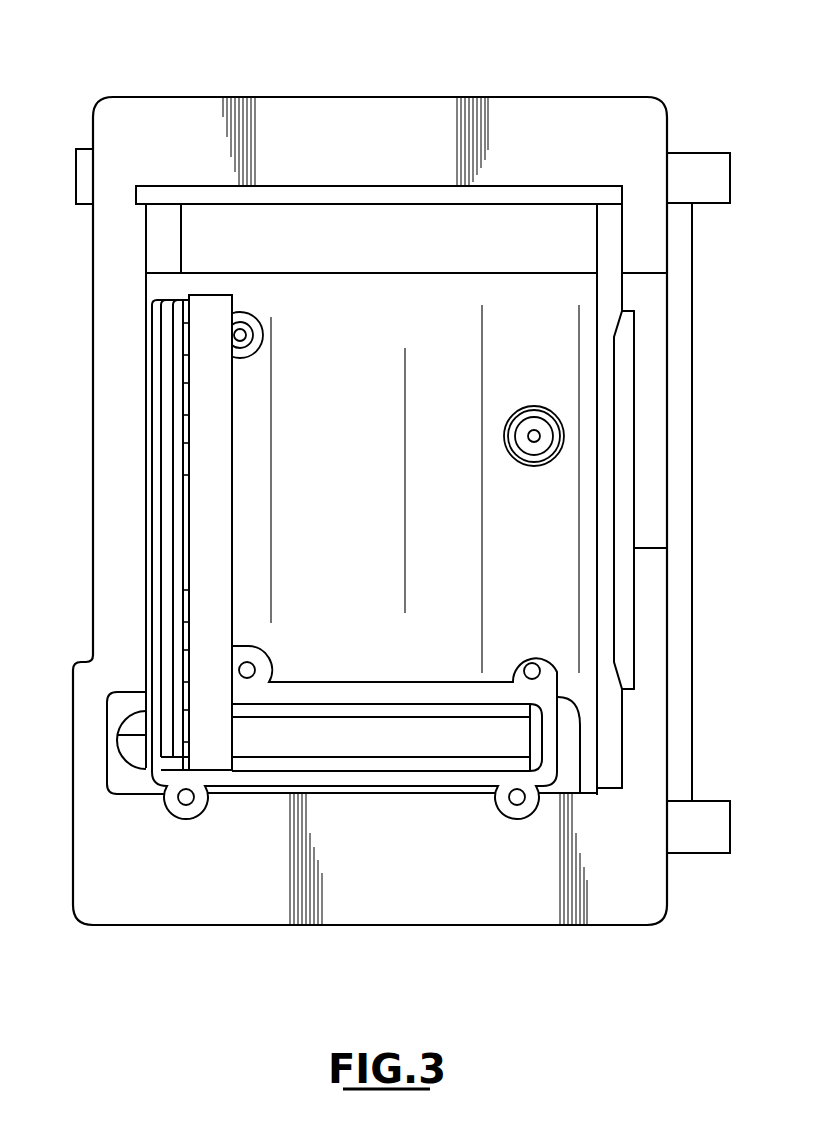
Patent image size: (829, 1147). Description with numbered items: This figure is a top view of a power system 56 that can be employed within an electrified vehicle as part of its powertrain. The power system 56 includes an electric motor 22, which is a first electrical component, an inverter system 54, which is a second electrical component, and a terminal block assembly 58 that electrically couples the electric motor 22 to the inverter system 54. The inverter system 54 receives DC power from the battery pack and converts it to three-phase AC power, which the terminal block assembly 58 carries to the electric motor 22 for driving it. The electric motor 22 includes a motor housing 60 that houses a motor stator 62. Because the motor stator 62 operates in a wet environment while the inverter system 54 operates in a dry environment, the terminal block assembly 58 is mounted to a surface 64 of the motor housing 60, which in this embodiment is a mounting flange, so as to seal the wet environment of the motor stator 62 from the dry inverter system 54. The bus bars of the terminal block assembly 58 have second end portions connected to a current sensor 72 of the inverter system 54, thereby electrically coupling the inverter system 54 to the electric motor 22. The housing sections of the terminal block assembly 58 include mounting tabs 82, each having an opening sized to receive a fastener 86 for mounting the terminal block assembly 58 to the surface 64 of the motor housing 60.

The electric motor 22 is at (685, 430).
The inverter system 54 is at (233, 286).
The power system 56 is at (686, 82).
The terminal block assembly 58 is at (349, 700).
The motor housing 60 is at (690, 262).
The motor stator 62 is at (560, 272).
The surface 64 is at (145, 806).
The current sensor 72 is at (213, 468).
The mounting tab 82 is at (245, 338).
The fastener 86 is at (243, 330).